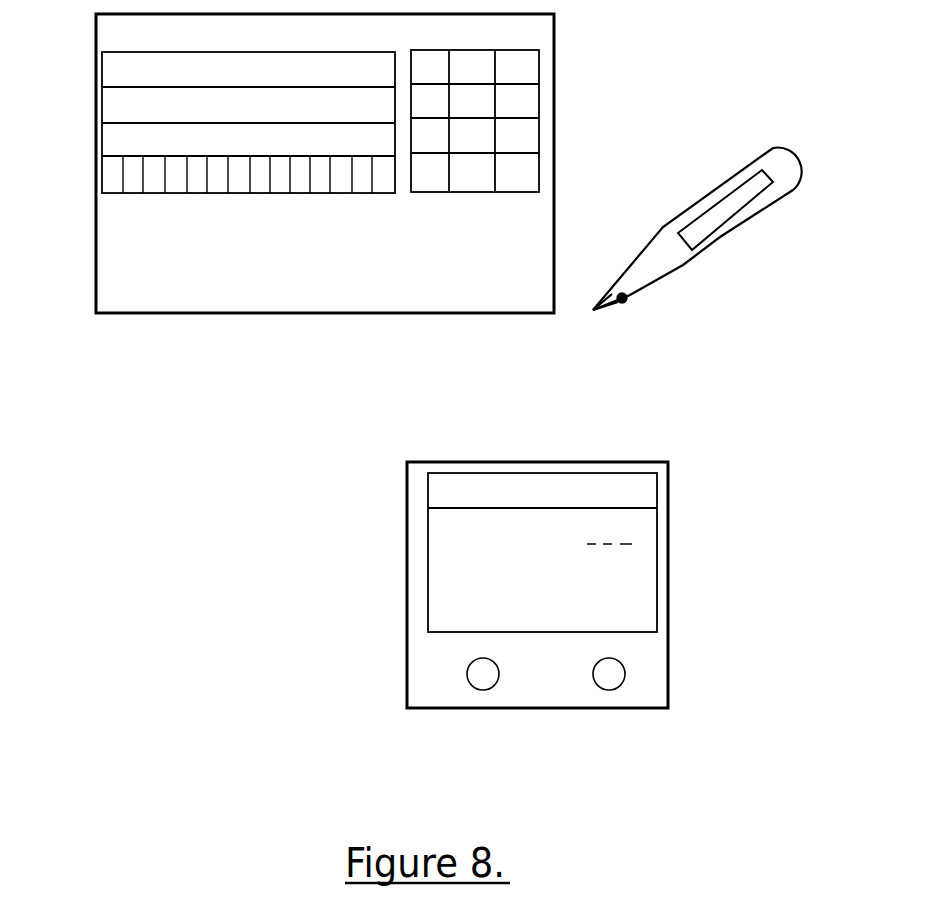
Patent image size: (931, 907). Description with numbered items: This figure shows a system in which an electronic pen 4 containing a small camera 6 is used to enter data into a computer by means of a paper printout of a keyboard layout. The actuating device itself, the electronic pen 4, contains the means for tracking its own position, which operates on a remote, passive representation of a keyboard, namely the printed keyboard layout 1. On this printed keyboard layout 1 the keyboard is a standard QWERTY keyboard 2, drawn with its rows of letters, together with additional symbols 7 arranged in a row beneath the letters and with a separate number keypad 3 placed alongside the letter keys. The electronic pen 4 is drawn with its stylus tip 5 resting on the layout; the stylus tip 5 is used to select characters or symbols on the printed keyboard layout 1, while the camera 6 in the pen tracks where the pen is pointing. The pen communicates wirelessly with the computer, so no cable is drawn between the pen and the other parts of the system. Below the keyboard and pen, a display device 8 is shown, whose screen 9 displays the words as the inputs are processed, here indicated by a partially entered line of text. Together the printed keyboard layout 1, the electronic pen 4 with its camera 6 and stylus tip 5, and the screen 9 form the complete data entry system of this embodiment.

The printed keyboard layout 1 is at (155, 313).
The QWERTY keyboard 2 is at (100, 125).
The number keypad 3 is at (478, 192).
The electronic pen 4 is at (732, 232).
The stylus tip 5 is at (595, 312).
The camera 6 is at (630, 302).
The additional symbols 7 is at (223, 195).
The display device 8 is at (407, 622).
The screen 9 is at (428, 495).